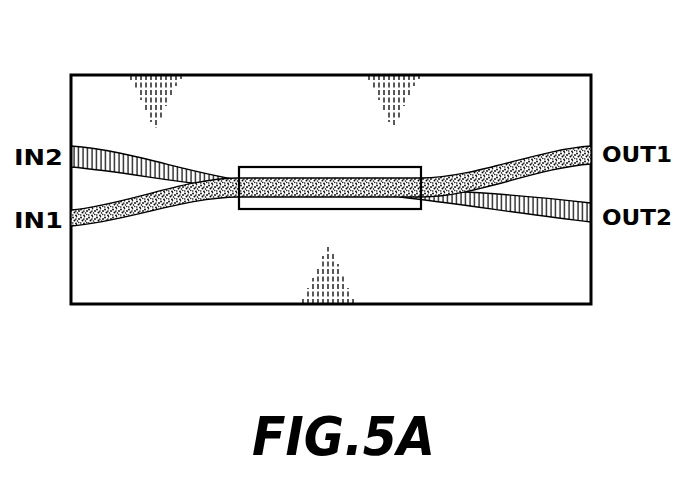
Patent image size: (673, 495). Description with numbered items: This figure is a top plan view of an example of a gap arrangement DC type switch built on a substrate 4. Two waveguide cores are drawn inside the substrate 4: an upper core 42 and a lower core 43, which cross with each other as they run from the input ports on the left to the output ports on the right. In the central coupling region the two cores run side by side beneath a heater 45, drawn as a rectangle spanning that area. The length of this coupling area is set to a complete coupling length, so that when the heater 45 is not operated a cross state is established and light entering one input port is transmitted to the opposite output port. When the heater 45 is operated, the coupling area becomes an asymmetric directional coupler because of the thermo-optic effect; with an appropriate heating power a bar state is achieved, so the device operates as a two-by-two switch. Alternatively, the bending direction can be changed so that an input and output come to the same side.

The optical waveguide substrate 4 is at (672, 131).
The upper core 42 is at (503, 167).
The lower core 43 is at (537, 206).
The heater 45 is at (366, 165).